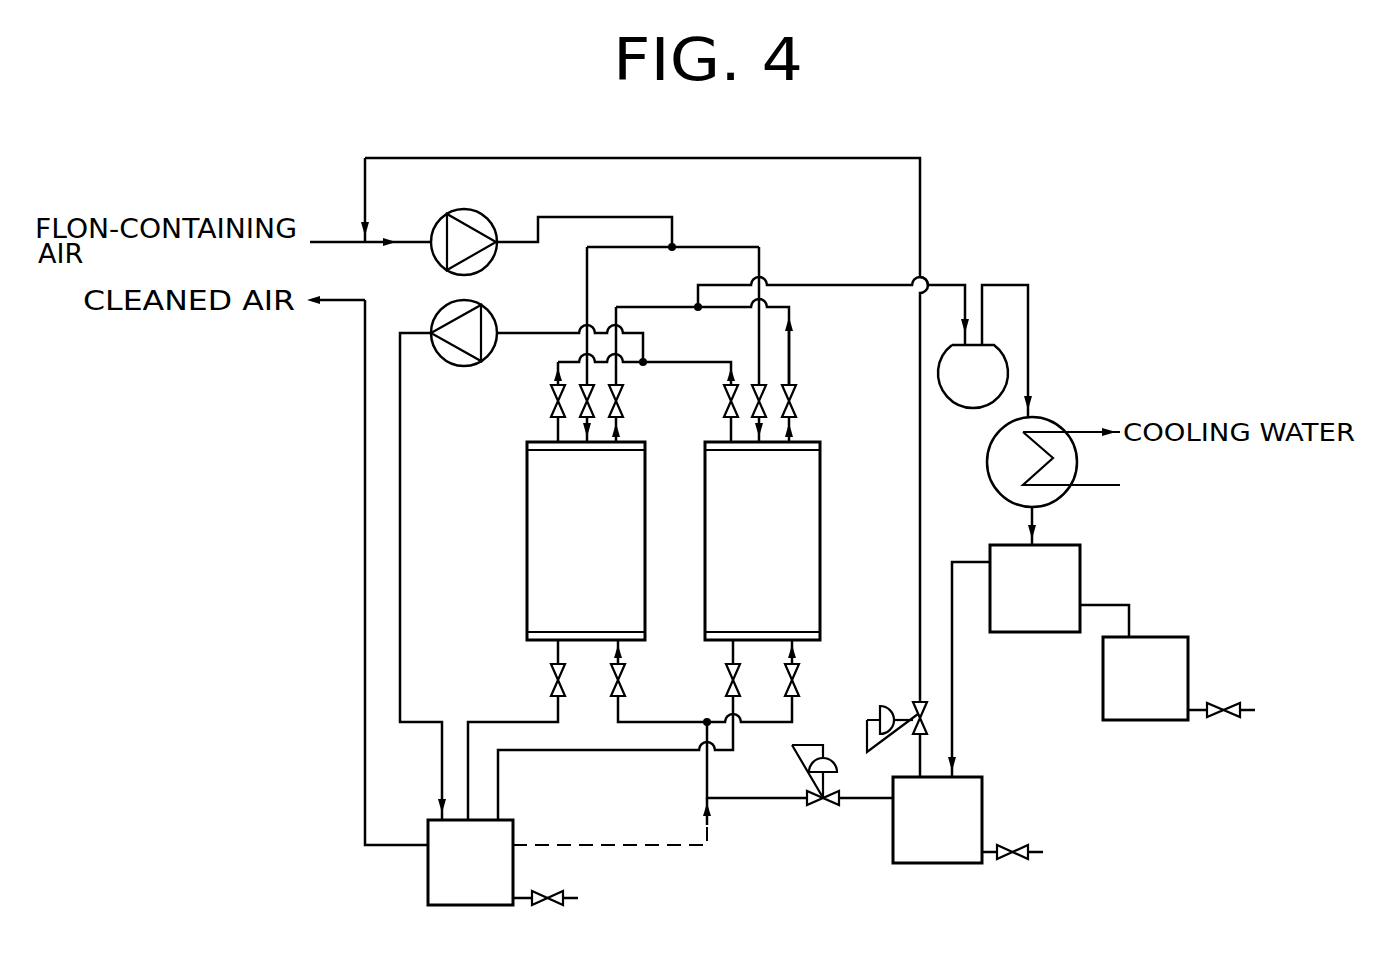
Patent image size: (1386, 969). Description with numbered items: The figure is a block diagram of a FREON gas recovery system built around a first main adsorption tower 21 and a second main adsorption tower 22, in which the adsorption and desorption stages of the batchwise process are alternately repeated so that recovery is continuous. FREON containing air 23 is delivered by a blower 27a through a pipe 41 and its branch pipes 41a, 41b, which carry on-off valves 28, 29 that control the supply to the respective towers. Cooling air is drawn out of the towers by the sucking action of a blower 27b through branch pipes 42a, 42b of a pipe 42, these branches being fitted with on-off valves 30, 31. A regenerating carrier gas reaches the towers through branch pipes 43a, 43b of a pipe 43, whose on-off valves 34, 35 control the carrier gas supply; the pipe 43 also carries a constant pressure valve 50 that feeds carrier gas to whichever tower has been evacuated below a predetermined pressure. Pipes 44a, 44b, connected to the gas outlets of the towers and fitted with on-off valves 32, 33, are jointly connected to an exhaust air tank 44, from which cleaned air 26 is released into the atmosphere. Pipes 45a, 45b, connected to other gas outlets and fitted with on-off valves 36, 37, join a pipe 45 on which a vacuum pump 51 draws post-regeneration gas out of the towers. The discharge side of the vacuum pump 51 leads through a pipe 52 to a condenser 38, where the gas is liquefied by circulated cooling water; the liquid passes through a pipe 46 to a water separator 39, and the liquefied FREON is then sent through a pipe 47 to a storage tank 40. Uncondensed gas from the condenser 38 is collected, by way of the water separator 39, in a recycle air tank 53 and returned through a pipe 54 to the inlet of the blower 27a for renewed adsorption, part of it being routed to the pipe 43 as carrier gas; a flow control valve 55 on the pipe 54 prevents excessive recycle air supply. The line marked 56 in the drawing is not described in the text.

The first main adsorption tower 21 is at (527, 503).
The second main adsorption tower 22 is at (822, 502).
The FREON containing air 23 is at (276, 207).
The cleaned air 26 is at (270, 318).
The blower 27a is at (497, 196).
The blower 27b is at (447, 362).
The on-off valve 28 is at (585, 384).
The on-off valve 29 is at (757, 384).
The on-off valve 30 is at (551, 394).
The on-off valve 31 is at (725, 405).
The on-off valve 32 is at (550, 690).
The on-off valve 33 is at (726, 690).
The on-off valve 34 is at (612, 700).
The on-off valve 35 is at (800, 690).
The on-off valve 36 is at (623, 395).
The on-off valve 37 is at (796, 408).
The condenser 38 is at (1048, 420).
The water separator 39 is at (1081, 558).
The storage tank 40 is at (1190, 645).
The pipe 41 is at (618, 216).
The branch pipe 41a is at (589, 283).
The branch pipe 41b is at (717, 247).
The pipe 42 is at (560, 332).
The branch pipe 42a is at (556, 432).
The branch pipe 42b is at (728, 430).
The pipe 43 is at (712, 770).
The branch pipe 43a is at (620, 690).
The branch pipe 43b is at (795, 678).
The exhaust air tank 44 is at (427, 887).
The pipe 44a is at (556, 654).
The pipe 44b is at (730, 656).
The pipe 45 is at (847, 283).
The pipe 45a is at (650, 312).
The pipe 45b is at (792, 330).
The pipe 46 is at (1034, 514).
The pipe 47 is at (1130, 622).
The constant pressure valve 50 is at (820, 805).
The vacuum pump 51 is at (963, 405).
The pipe 52 is at (1029, 318).
The recycle air tank 53 is at (983, 785).
The pipe 54 is at (863, 157).
The flow control valve 55 is at (929, 708).
The drain line 56 is at (953, 640).